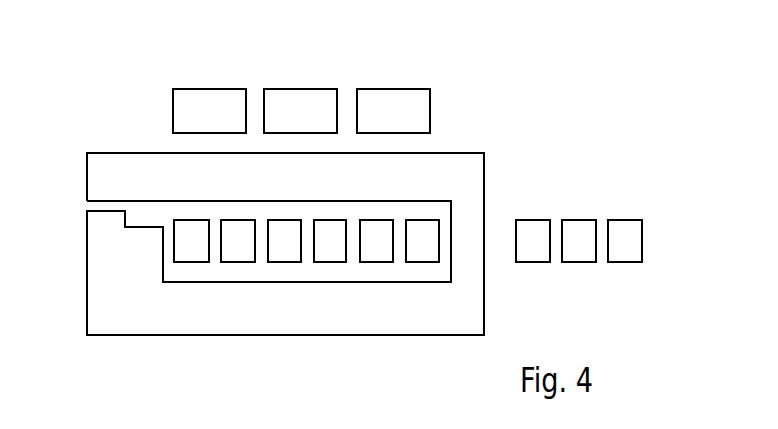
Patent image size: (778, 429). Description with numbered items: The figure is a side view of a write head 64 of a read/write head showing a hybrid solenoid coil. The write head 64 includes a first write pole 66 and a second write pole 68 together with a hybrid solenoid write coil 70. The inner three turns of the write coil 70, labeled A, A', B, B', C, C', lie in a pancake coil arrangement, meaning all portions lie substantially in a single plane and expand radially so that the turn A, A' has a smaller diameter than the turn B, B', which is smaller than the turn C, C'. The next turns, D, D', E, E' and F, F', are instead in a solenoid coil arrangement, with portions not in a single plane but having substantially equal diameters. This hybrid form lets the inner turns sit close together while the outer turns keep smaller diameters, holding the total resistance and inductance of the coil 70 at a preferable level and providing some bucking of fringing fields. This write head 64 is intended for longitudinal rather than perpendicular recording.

The write head 64 is at (518, 140).
The first write pole (P1) 66 is at (180, 313).
The second write pole (P2) 68 is at (132, 170).
The hybrid solenoid write coil 70 is at (381, 82).